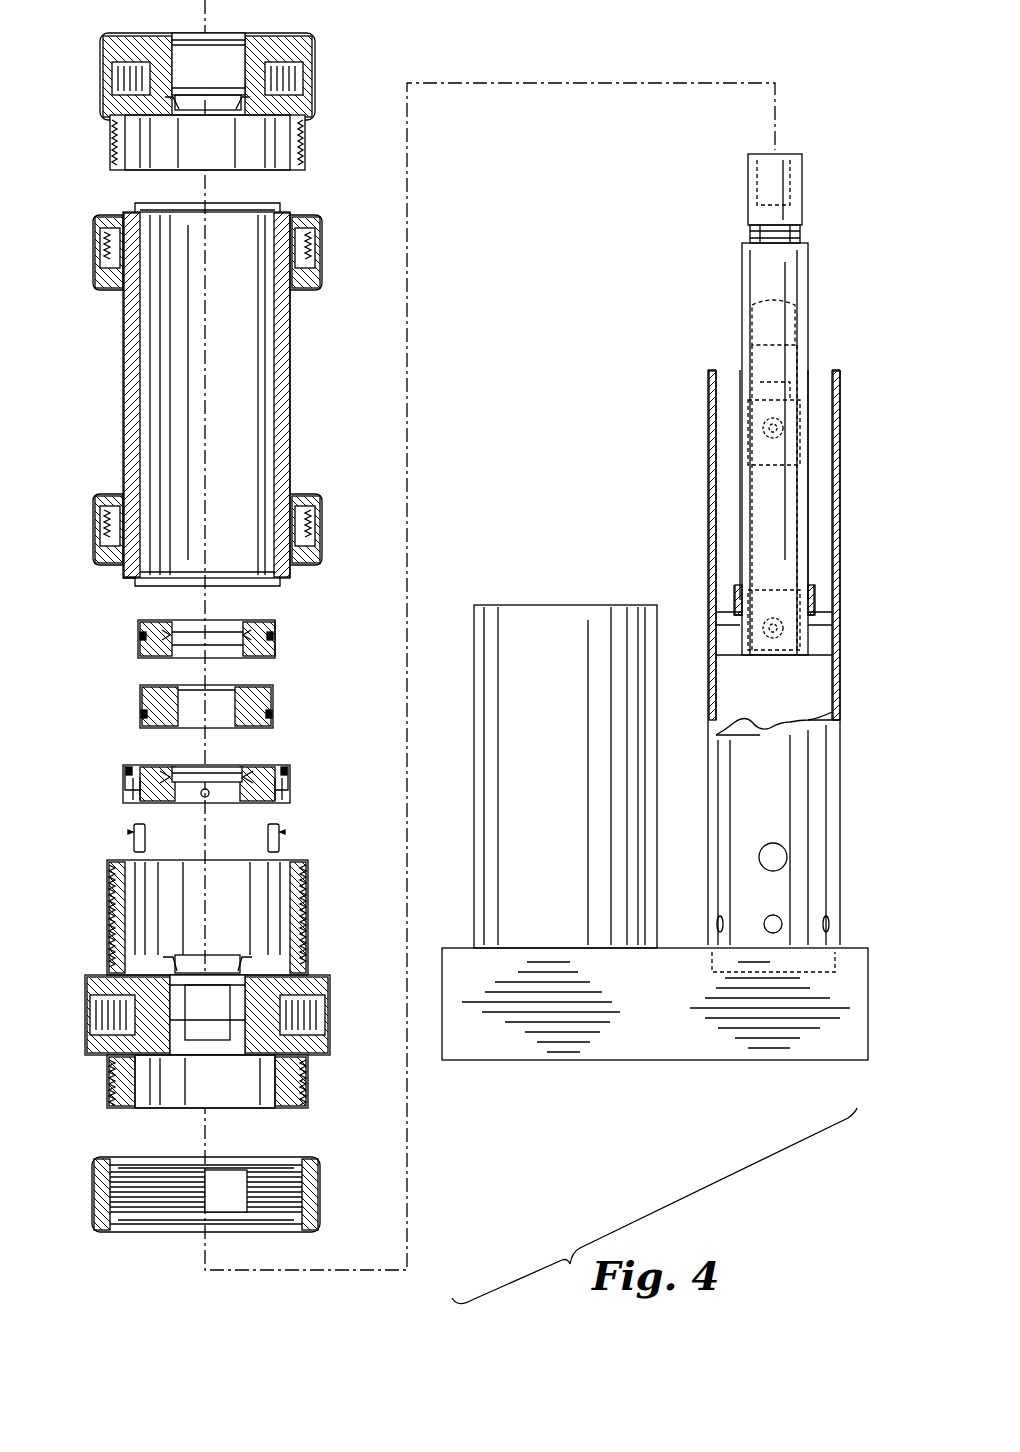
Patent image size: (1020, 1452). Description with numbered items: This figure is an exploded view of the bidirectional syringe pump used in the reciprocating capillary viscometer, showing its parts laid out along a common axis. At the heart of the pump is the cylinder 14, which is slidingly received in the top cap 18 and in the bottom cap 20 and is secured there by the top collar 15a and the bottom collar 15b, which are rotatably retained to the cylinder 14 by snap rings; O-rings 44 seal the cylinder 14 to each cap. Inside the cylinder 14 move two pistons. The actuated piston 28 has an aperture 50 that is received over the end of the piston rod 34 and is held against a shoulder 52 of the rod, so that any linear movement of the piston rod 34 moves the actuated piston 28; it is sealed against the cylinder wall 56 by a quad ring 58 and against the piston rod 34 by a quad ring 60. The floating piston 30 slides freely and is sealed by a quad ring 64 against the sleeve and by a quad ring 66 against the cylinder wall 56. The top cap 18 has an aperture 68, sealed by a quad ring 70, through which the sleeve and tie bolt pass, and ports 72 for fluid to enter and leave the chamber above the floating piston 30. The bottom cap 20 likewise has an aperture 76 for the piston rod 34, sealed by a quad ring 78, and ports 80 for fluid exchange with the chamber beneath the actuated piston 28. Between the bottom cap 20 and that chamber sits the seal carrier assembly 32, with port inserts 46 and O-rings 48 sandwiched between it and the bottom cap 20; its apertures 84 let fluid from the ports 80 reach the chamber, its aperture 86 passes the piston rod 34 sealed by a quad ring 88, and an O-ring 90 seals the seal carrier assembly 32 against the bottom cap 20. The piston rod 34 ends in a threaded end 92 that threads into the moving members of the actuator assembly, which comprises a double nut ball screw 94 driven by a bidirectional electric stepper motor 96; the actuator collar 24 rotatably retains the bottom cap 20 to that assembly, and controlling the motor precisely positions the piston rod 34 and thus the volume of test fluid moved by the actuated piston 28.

The cylinder 14 is at (280, 445).
The top collar 15a is at (322, 272).
The bottom collar 15b is at (318, 498).
The top cap 18 is at (108, 36).
The bottom cap 20 is at (310, 928).
The actuator collar 24 is at (312, 1165).
The actuated piston 28 is at (272, 697).
The floating piston 30 is at (275, 635).
The seal carrier assembly 32 is at (290, 788).
The piston rod 34 is at (740, 318).
The O-rings 44 is at (285, 208).
The port inserts 46 is at (138, 845).
The O-rings 48 is at (128, 834).
The aperture 50 is at (190, 730).
The shoulder 52 is at (748, 244).
The cylinder wall 56 is at (175, 435).
The quad ring 58 is at (145, 712).
The quad ring 60 is at (750, 228).
The quad ring 64 is at (230, 655).
The quad ring 66 is at (140, 640).
The aperture 68 is at (213, 34).
The quad ring 70 is at (175, 108).
The ports 72 is at (312, 80).
The aperture 76 is at (190, 1000).
The quad ring 78 is at (180, 958).
The ports 80 is at (85, 1010).
The apertures 84 is at (135, 805).
The aperture 86 is at (195, 768).
The quad ring 88 is at (238, 790).
The O-ring 90 is at (288, 768).
The threaded end 92 is at (732, 615).
The double nut ball screw 94 is at (722, 640).
The bidirectional electric stepper motor 96 is at (520, 770).